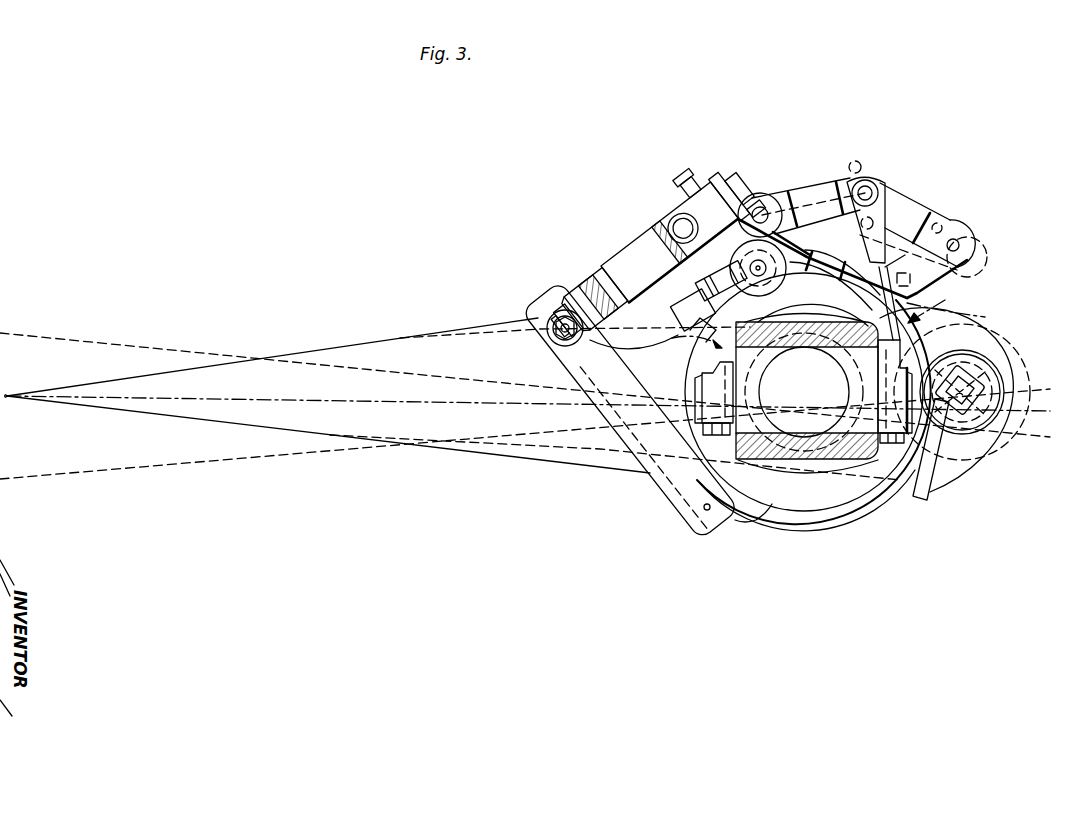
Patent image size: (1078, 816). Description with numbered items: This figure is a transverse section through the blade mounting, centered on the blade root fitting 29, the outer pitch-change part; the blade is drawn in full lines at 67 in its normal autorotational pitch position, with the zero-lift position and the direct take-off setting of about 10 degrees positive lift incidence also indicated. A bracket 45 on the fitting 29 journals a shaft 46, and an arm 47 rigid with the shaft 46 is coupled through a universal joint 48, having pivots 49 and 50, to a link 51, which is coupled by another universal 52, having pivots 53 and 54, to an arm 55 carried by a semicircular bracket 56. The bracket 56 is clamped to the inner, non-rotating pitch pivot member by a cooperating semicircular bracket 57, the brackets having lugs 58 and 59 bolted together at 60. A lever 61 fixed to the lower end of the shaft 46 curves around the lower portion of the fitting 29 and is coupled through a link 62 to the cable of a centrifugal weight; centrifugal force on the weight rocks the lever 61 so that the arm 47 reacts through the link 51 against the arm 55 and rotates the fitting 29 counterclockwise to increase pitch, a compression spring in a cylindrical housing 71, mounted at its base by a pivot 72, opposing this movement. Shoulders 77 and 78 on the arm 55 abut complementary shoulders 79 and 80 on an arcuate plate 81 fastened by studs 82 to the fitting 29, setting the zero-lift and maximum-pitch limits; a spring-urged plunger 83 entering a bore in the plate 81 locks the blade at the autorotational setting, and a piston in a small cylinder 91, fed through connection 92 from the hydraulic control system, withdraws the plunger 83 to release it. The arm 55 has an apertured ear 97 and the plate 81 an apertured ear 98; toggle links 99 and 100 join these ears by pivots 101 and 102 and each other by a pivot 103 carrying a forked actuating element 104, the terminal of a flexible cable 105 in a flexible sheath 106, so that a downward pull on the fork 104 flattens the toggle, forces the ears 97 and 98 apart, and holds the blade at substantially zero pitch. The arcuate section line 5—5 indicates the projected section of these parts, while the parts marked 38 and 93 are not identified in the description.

The arcuate section line 5 is at (817, 317).
The direct take-off pitch setting 10 is at (982, 393).
The blade root fitting 29 is at (852, 497).
The bearing clamp bar 38 is at (745, 325).
The bracket 45 is at (668, 342).
The shaft 46 is at (660, 486).
The arm 47 is at (548, 352).
The universal joint 48 is at (553, 290).
The pivot 49 is at (547, 325).
The pivot 50 is at (590, 272).
The link 51 is at (632, 232).
The universal joint 52 is at (722, 206).
The pivot 53 is at (683, 225).
The pivot 54 is at (710, 183).
The arm 55 is at (739, 212).
The semicircular bracket 56 is at (806, 288).
The cooperating semicircular bracket 57 is at (805, 470).
The lugs 58 is at (708, 380).
The lugs 59 is at (891, 444).
The bolts 60 is at (722, 422).
The lever 61 is at (820, 526).
The link 62 is at (993, 357).
The blade pitch setting 67 is at (469, 459).
The cylindrical housing 71 is at (1001, 375).
The pivot 72 is at (966, 455).
The shoulder 77 is at (745, 258).
The shoulder 78 is at (812, 252).
The shoulder 79 is at (708, 320).
The shoulder 80 is at (833, 263).
The arcuate plate 81 is at (872, 278).
The studs 82 is at (700, 296).
The plunger 83 is at (793, 305).
The cylinder 91 is at (778, 312).
The connection 92 is at (676, 309).
The pivot pin 93 is at (757, 256).
The apertured ear 97 is at (803, 216).
The apertured ear 98 is at (978, 264).
The toggle link 99 is at (840, 195).
The toggle link 100 is at (910, 212).
The pivot 101 is at (763, 208).
The pivot 102 is at (962, 247).
The pivot 103 is at (870, 190).
The forked actuating element 104 is at (874, 245).
The flexible cable 105 is at (950, 326).
The flexible sheath 106 is at (928, 480).